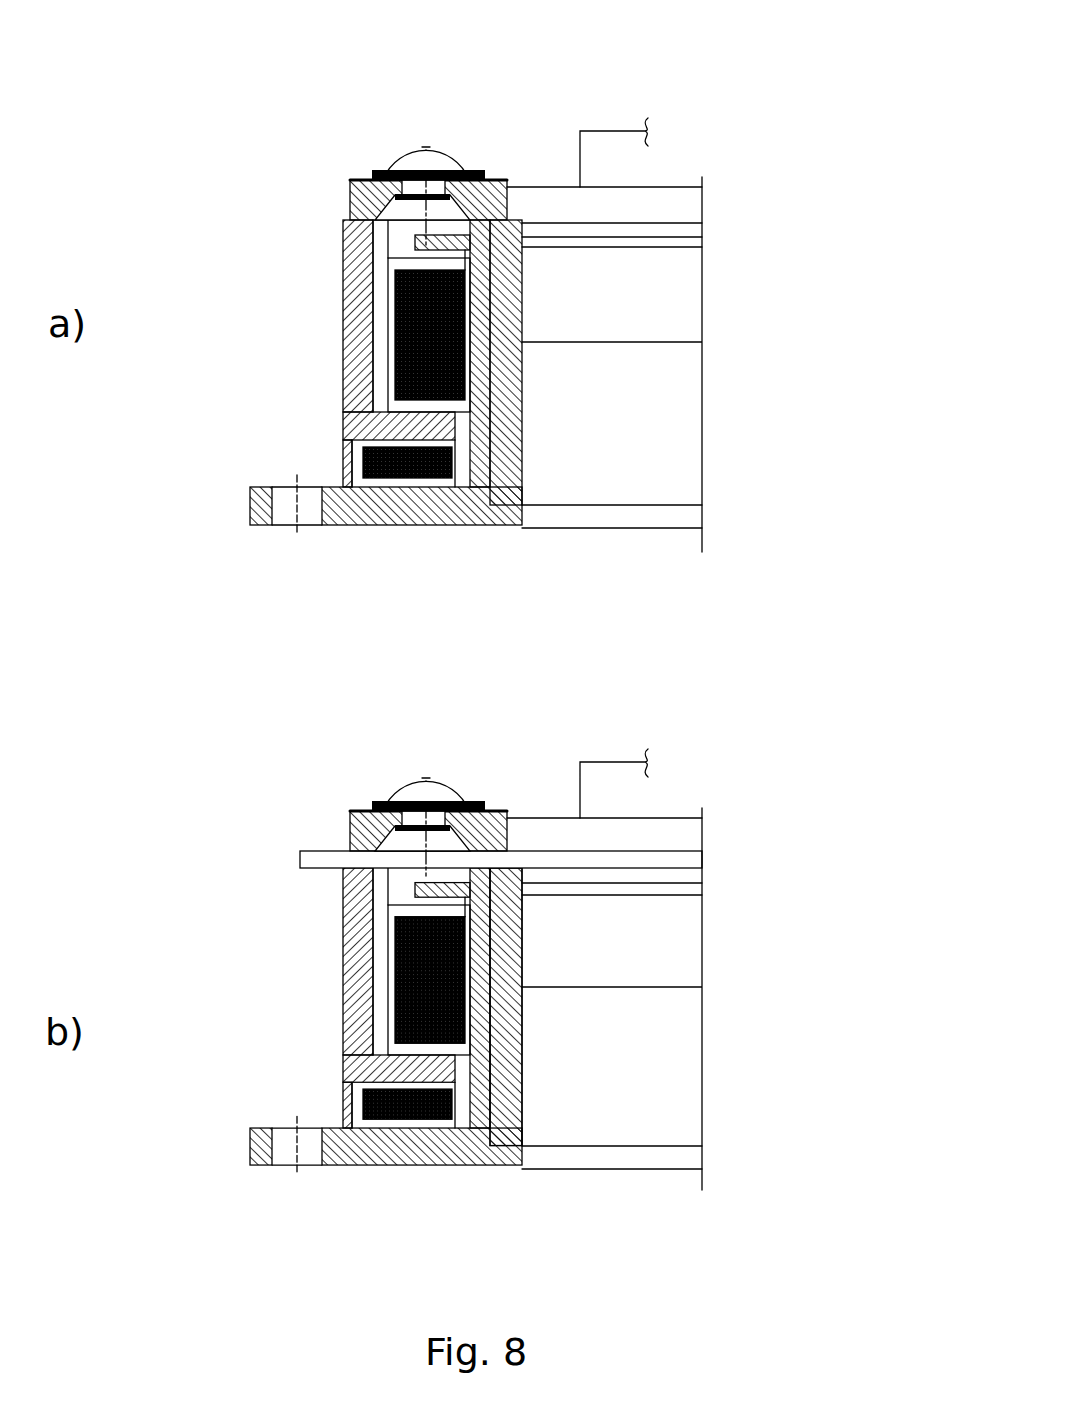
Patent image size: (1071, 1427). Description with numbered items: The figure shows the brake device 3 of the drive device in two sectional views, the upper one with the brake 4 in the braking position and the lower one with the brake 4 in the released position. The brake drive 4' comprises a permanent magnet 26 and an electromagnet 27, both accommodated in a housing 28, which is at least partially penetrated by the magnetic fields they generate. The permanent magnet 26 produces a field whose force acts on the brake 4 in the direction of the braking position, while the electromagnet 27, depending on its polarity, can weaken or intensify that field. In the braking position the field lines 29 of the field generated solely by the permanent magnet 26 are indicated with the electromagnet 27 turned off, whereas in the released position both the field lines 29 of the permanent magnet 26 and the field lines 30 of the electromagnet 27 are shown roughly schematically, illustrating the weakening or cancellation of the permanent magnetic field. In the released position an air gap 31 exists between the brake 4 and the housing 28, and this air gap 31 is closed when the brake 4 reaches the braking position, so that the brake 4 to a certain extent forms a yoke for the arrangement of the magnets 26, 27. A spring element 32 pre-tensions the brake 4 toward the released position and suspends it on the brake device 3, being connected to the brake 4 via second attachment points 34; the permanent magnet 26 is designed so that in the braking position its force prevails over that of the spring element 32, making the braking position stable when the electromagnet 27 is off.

In FIG. 8a, the brake device 3 is at (316, 423).
In FIG. 8b, the brake device 3 is at (322, 1050).
In FIG. 8a, the brake 4 is at (604, 264).
In FIG. 8b, the brake 4 is at (604, 917).
In FIG. 8a, the brake drive 4' is at (678, 364).
In FIG. 8b, the brake drive 4' is at (680, 999).
In FIG. 8a, the permanent magnet 26 is at (378, 525).
In FIG. 8b, the permanent magnet 26 is at (378, 1165).
In FIG. 8a, the electromagnet 27 is at (347, 342).
In FIG. 8b, the electromagnet 27 is at (346, 978).
In FIG. 8a, the housing 28 is at (478, 525).
In FIG. 8b, the housing 28 is at (448, 1167).
In FIG. 8a, the field lines 29 is at (525, 300).
In FIG. 8b, the field lines 29 is at (528, 1102).
In FIG. 8b, the field lines 30 is at (530, 1043).
In FIG. 8b, the air gap 31 is at (307, 940).
In FIG. 8a, the spring element 32 is at (487, 150).
In FIG. 8b, the spring element 32 is at (490, 810).
In FIG. 8a, the second attachment points 34 is at (418, 150).
In FIG. 8b, the second attachment points 34 is at (423, 805).